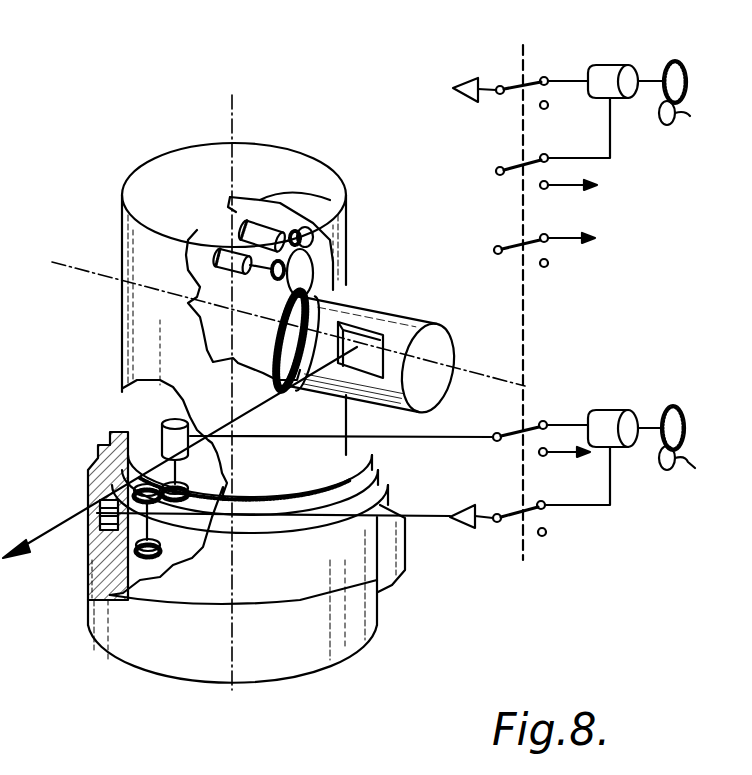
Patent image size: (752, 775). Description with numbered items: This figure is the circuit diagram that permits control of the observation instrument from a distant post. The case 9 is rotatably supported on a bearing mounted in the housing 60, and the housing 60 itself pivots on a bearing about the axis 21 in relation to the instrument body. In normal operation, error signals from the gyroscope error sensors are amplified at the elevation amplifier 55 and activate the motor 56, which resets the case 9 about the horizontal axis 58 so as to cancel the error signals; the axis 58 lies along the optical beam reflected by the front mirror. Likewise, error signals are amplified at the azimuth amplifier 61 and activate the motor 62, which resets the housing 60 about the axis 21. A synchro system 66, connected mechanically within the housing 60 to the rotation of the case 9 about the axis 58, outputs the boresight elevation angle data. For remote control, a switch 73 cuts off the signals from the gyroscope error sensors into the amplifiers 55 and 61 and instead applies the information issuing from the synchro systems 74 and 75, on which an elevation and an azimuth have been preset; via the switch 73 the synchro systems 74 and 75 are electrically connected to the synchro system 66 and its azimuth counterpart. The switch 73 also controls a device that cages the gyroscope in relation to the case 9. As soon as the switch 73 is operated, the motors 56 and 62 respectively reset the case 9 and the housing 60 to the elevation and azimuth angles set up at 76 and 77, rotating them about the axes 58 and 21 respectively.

The case 9 is at (380, 312).
The axis 21 is at (233, 130).
The amplifier 55 is at (470, 78).
The motor 56 is at (228, 270).
The horizontal axis 58 is at (492, 378).
The housing 60 is at (135, 320).
The amplifier 61 is at (462, 524).
The motor 62 is at (95, 520).
The synchro system 66 is at (285, 196).
The switch 73 is at (527, 52).
The synchro system 74 is at (605, 72).
The synchro system 75 is at (605, 412).
The elevation setting means 76 is at (688, 112).
The azimuth setting means 77 is at (682, 452).